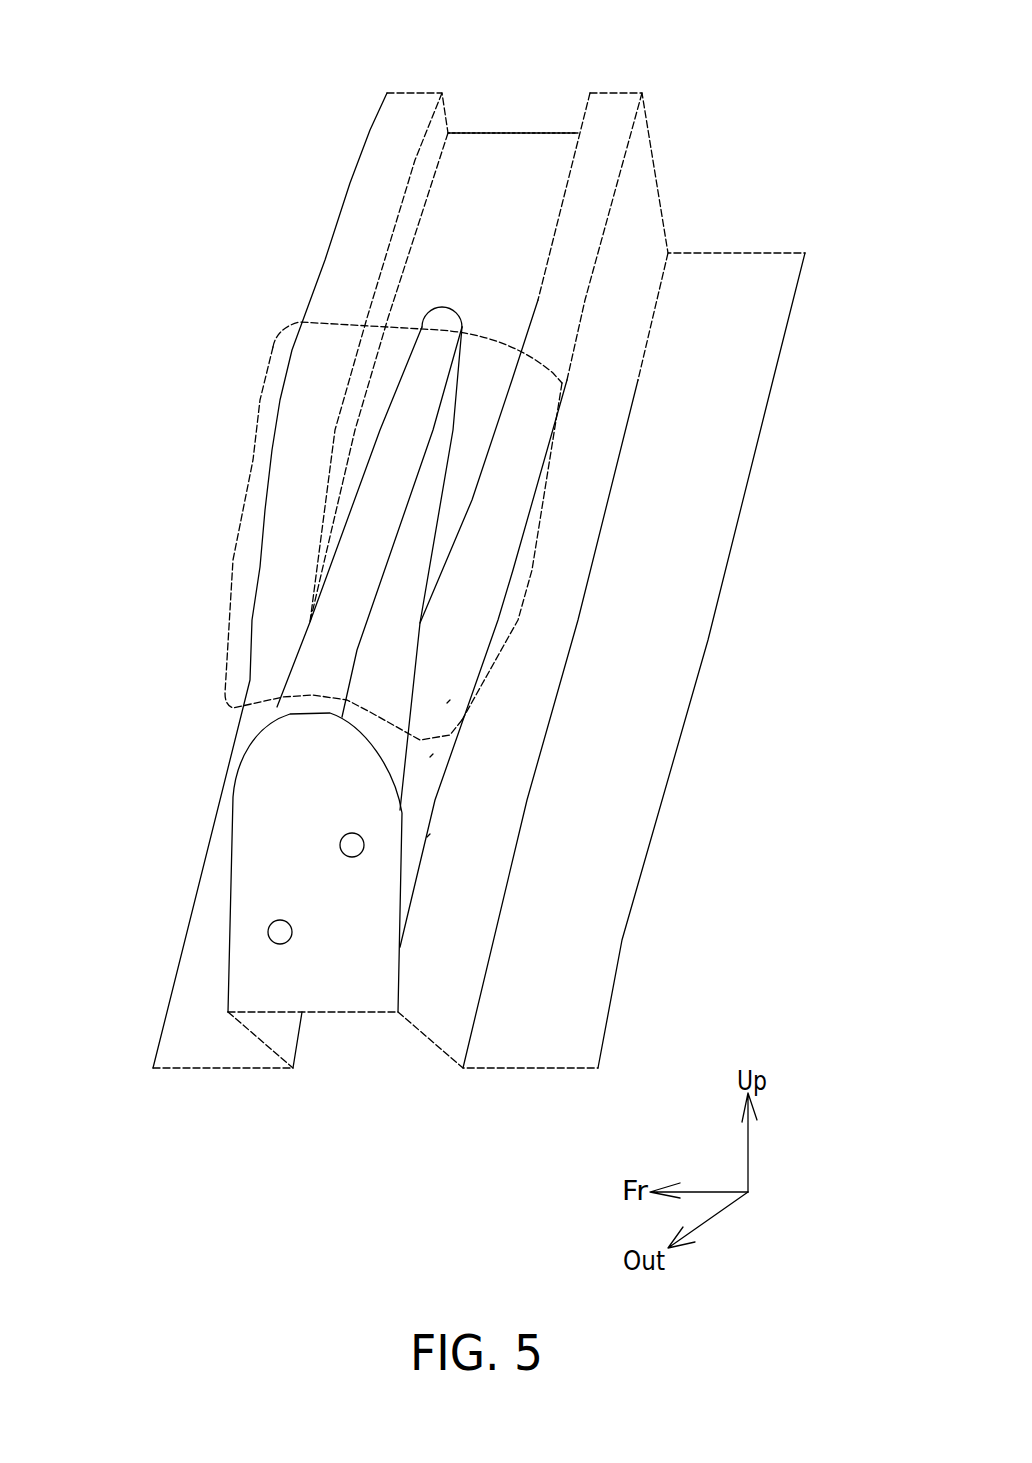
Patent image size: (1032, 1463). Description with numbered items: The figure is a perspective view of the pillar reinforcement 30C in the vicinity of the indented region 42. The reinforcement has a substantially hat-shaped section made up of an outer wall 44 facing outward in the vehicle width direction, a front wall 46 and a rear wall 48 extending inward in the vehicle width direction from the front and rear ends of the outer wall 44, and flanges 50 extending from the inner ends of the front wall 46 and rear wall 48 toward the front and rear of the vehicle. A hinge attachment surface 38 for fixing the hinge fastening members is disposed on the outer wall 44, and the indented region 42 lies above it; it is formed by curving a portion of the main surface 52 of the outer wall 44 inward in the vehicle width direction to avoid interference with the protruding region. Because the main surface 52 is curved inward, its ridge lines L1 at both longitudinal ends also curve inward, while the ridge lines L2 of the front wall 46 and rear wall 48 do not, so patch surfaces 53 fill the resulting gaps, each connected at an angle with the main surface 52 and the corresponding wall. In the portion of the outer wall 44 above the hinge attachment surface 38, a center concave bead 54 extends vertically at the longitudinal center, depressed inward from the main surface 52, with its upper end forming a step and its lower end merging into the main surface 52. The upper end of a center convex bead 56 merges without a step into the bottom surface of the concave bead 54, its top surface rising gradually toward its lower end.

The reinforcement panel 30C is at (265, 282).
The hinge attachment surface 38 is at (372, 980).
The indented region 42 is at (235, 612).
The outer wall 44 is at (437, 220).
The front wall 46 is at (280, 1037).
The rear wall 48 is at (630, 290).
The flanges 50 is at (208, 947).
The main surface 52 is at (405, 112).
The patch surfaces 53 is at (430, 757).
The center concave bead 54 is at (478, 157).
The center convex bead 56 is at (397, 437).
The ridge lines of the main surface L1 is at (447, 703).
The ridge lines of the front wall and the rear wall L2 is at (427, 837).